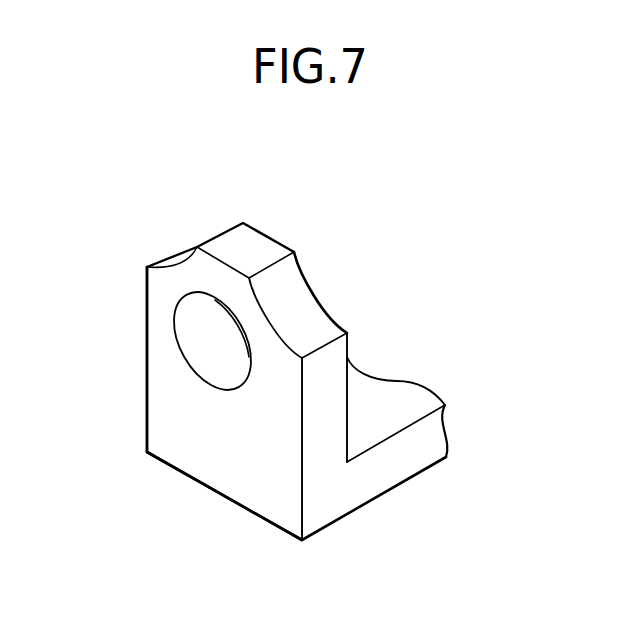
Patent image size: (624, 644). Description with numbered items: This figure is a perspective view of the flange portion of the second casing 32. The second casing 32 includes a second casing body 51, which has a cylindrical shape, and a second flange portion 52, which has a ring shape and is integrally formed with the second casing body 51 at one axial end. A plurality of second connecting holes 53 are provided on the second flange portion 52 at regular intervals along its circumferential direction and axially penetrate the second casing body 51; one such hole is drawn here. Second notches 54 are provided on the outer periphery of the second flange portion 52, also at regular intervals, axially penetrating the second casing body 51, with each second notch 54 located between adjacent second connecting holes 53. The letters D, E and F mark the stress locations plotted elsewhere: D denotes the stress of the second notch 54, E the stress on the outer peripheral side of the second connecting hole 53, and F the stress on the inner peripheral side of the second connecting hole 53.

The second casing 32 is at (408, 485).
The second casing body 51 is at (418, 441).
The second flange portion 52 is at (176, 415).
The second connecting hole 53 is at (180, 313).
The second notch 54 is at (177, 258).
The line E is at (213, 292).
The line D is at (347, 331).
The line F is at (212, 383).